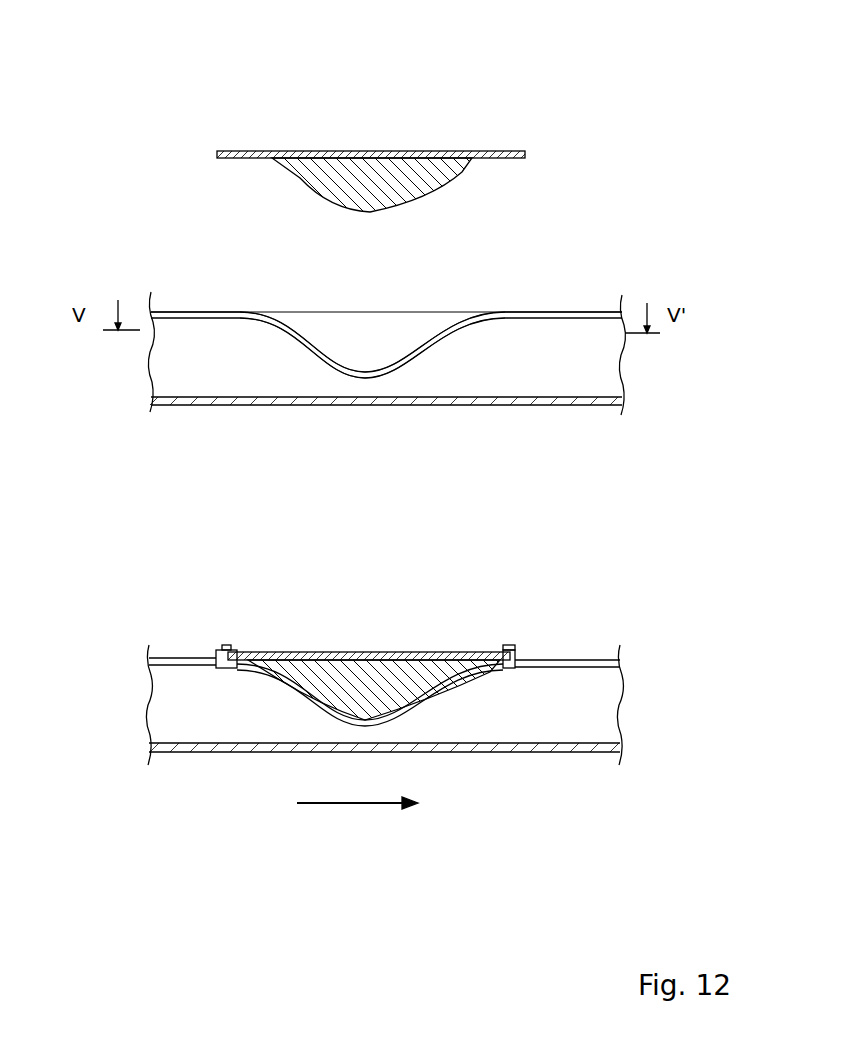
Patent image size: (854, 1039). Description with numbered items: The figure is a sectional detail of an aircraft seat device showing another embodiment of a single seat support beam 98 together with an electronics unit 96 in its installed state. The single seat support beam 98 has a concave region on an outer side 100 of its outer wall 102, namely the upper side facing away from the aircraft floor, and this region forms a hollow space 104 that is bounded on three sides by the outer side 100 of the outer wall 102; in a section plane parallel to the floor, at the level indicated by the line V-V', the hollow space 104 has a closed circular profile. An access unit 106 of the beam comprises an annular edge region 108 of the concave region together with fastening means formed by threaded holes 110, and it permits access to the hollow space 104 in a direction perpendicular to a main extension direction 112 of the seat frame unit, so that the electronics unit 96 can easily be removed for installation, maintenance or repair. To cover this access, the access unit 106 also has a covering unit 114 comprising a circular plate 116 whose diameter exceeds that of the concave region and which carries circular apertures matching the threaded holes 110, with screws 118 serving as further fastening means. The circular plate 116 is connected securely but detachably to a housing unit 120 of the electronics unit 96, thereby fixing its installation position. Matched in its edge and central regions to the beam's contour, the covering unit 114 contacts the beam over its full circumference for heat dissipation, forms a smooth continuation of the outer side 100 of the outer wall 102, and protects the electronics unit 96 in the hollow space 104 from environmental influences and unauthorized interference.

The electronics unit 96 is at (295, 152).
The housing unit 120 is at (300, 172).
The access unit 106 is at (520, 245).
The single seat support beam 98 is at (208, 312).
The threaded holes 110 is at (505, 312).
The hollow space 104 is at (368, 345).
The annular edge region 108 is at (527, 320).
The outer side 100 is at (540, 660).
The outer wall 102 is at (578, 660).
The covering unit 114 is at (270, 625).
The circular plate 116 is at (420, 650).
The screws 118 is at (225, 648).
The main extension direction 112 is at (357, 808).